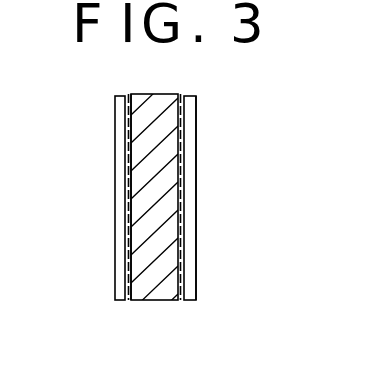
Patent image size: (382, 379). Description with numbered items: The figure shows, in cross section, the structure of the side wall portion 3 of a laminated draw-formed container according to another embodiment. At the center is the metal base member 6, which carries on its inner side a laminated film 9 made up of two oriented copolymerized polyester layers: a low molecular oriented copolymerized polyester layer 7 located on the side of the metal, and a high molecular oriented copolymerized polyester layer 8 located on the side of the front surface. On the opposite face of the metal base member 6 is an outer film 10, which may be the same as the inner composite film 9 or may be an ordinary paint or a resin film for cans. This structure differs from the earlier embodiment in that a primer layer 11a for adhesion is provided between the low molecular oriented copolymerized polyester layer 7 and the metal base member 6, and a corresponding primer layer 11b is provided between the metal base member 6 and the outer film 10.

The side wall portion 3 is at (163, 220).
The metal base member 6 is at (155, 288).
The low molecular oriented copolymerized polyester layer 7 is at (183, 241).
The high molecular oriented copolymerized polyester layer 8 is at (197, 192).
The laminated film 9 is at (130, 238).
The outer film 10 is at (115, 198).
The primer layer 11a is at (197, 157).
The primer layer 11b is at (128, 141).